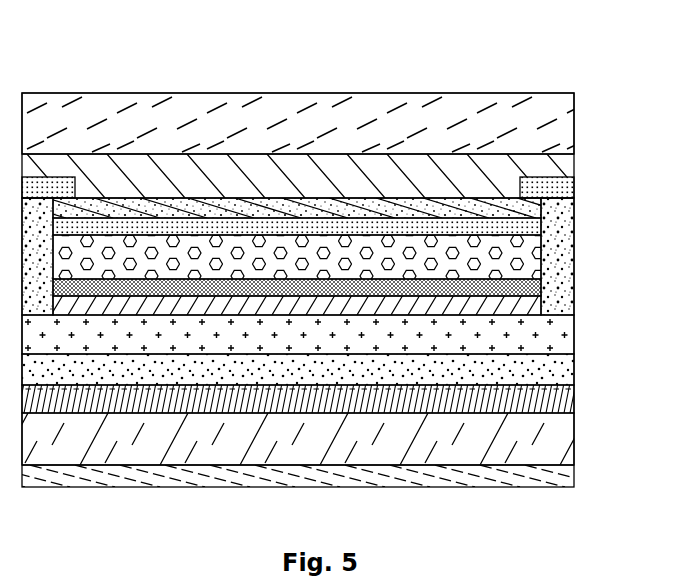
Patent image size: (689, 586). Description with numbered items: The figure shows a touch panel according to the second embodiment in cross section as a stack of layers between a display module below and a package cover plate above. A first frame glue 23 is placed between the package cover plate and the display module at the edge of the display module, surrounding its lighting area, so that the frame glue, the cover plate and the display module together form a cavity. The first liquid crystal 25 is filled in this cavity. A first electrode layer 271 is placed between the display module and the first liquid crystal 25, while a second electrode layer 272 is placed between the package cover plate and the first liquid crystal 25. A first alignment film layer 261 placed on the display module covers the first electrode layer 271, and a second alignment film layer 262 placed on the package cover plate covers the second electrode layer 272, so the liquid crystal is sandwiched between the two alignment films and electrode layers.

The first frame glue 23 is at (558, 243).
The first liquid crystal 25 is at (342, 263).
The first alignment film layer 261 is at (410, 290).
The second alignment film layer 262 is at (295, 228).
The first electrode layer 271 is at (480, 308).
The second electrode layer 272 is at (217, 212).